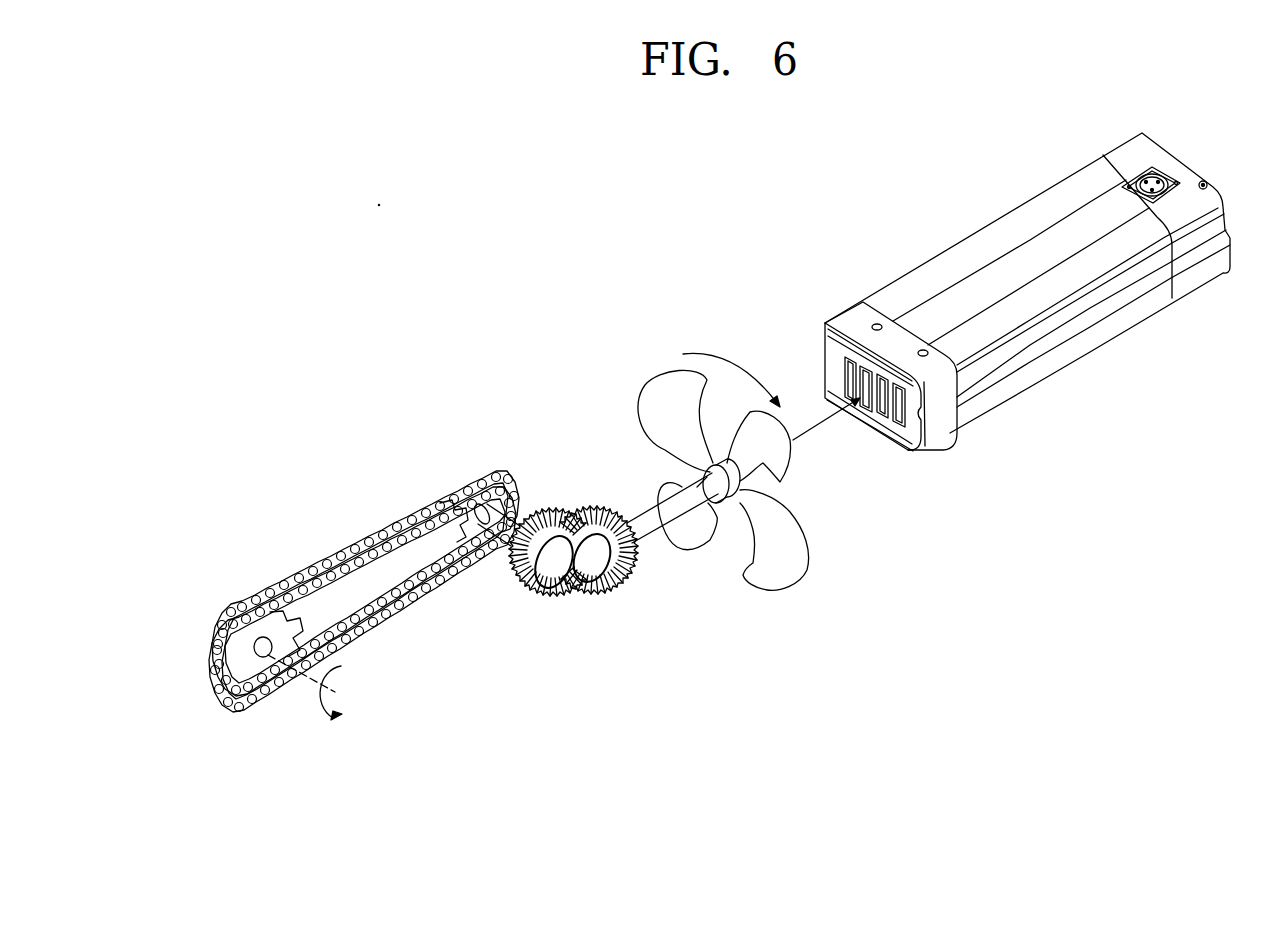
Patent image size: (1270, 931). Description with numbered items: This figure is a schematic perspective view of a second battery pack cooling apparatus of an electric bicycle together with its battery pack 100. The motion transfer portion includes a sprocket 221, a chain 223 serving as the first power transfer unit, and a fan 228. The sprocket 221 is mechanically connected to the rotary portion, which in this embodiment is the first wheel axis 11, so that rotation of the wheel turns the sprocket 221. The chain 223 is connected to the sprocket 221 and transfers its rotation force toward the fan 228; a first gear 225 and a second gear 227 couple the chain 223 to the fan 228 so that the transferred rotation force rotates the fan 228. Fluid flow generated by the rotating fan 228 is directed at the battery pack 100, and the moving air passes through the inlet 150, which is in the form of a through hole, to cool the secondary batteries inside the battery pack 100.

The battery pack 100 is at (1108, 357).
The inlet 150 is at (897, 418).
The fan 228 is at (800, 597).
The second gear 227 is at (615, 598).
The first gear 225 is at (530, 597).
The chain 223 is at (363, 530).
The sprocket 221 is at (268, 687).
The first wheel axis 11 is at (261, 656).